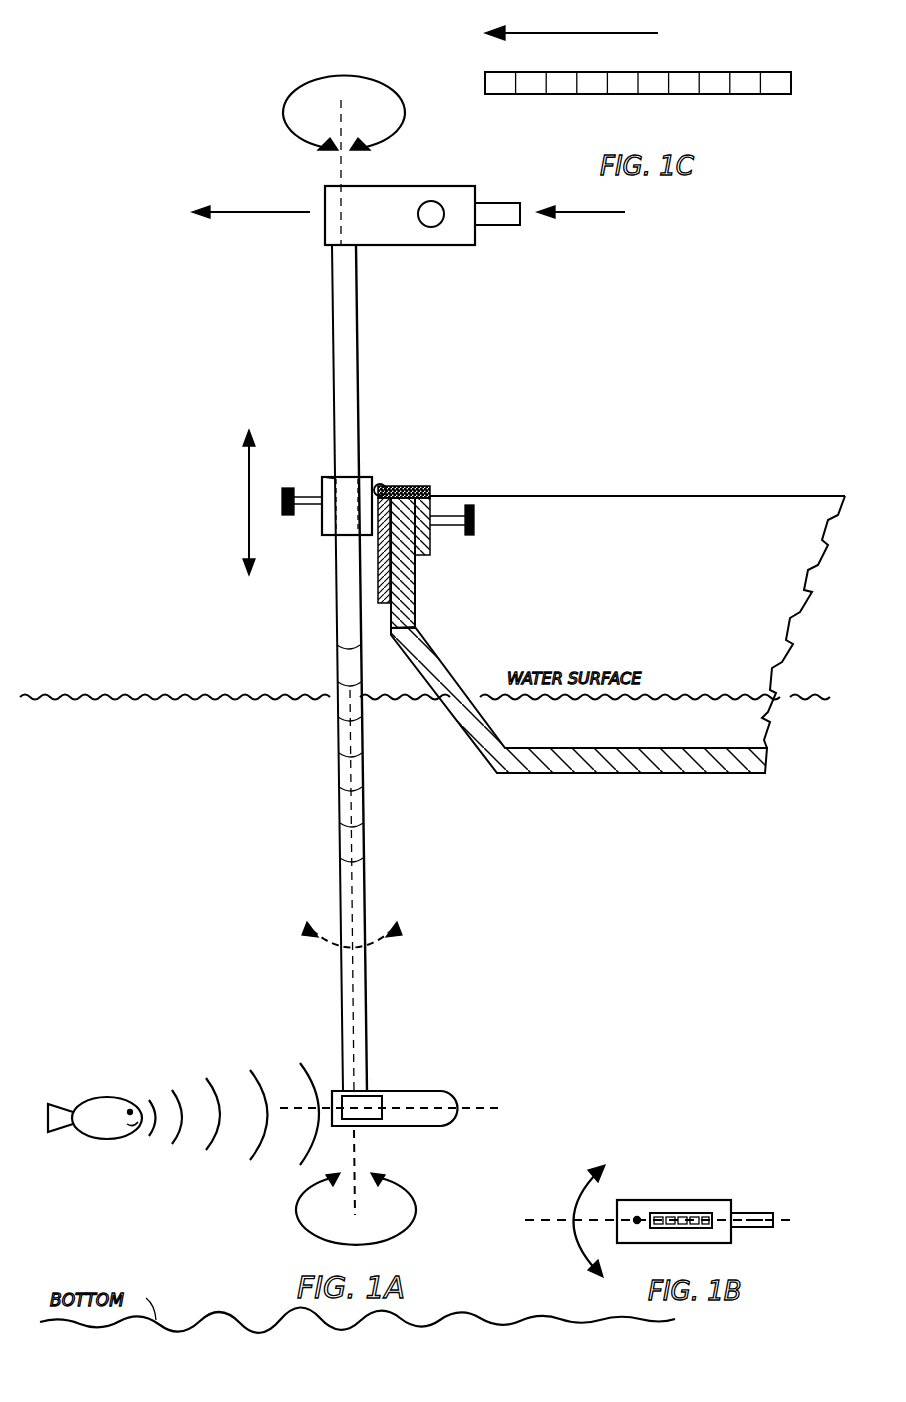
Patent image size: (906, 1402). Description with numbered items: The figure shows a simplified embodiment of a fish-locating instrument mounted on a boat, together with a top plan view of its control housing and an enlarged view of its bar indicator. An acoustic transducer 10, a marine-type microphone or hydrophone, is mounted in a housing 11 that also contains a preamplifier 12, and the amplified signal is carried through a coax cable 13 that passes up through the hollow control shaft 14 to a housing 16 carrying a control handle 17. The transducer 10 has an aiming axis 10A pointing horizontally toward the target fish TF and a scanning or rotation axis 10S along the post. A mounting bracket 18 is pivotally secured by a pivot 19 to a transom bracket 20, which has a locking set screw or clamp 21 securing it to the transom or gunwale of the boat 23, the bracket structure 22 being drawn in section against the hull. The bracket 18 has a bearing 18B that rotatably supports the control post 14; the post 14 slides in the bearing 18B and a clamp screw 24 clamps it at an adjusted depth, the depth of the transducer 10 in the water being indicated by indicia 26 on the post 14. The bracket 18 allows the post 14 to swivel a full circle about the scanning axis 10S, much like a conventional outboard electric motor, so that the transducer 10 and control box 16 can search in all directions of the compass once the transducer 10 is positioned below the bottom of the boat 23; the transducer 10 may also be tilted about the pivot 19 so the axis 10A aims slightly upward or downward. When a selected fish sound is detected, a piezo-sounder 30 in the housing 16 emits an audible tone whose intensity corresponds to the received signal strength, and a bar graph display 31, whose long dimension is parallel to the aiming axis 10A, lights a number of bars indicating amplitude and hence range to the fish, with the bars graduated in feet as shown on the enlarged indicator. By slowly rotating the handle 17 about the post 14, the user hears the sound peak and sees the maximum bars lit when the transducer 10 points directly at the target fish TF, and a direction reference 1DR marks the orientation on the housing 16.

In FIG. 1A, the acoustic transducer 10 is at (340, 1093).
In FIG. 1A, the aiming axis 10A is at (300, 1113).
In FIG. 1B, the aiming axis 10A is at (535, 1222).
In FIG. 1A, the scanning or rotation axis 10S is at (337, 146).
In FIG. 1A, the housing 11 is at (437, 1112).
In FIG. 1A, the preamplifier 12 is at (376, 1097).
In FIG. 1A, the coax cable 13 is at (355, 975).
In FIG. 1A, the control shaft 14 is at (333, 343).
In FIG. 1A, the housing 16 is at (385, 224).
In FIG. 1B, the housing 16 is at (652, 1200).
In FIG. 1A, the control handle 17 is at (495, 228).
In FIG. 1B, the control handle 17 is at (770, 1212).
In FIG. 1A, the mounting bracket 18 is at (353, 490).
In FIG. 1A, the bearing 18B is at (337, 478).
In FIG. 1A, the pivot 19 is at (386, 485).
In FIG. 1A, the transom bracket 20 is at (430, 488).
In FIG. 1A, the locking set screw or clamp 21 is at (478, 518).
In FIG. 1A, the boat bracket / hull 22 is at (415, 578).
In FIG. 1A, the boat 23 is at (612, 520).
In FIG. 1A, the clamp screw 24 is at (283, 505).
In FIG. 1A, the indicia 26 is at (336, 672).
In FIG. 1A, the piezo-sounder 30 is at (430, 200).
In FIG. 1C, the bar graph display 31 is at (652, 90).
In FIG. 1B, the bar graph display 31 is at (690, 1212).
In FIG. 1B, the direction reference 1DR is at (637, 1224).
In FIG. 1A, the target fish TF is at (102, 1097).